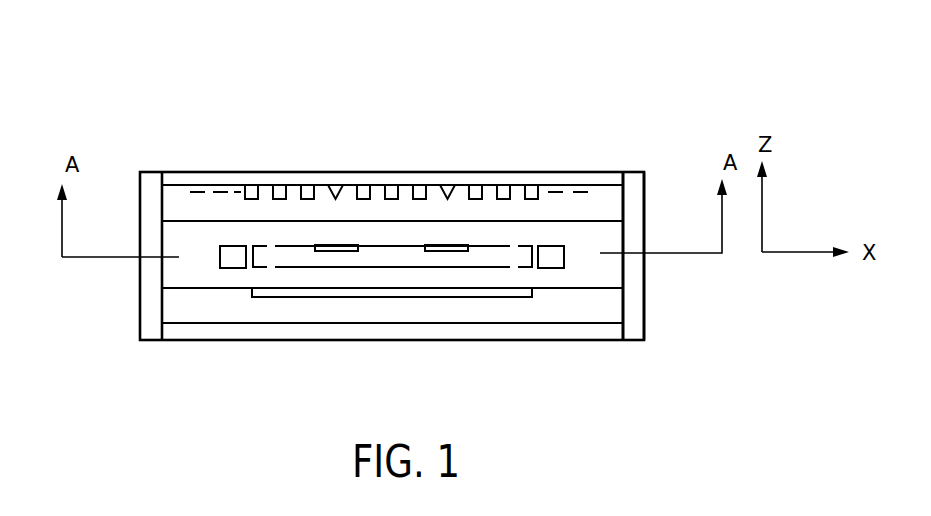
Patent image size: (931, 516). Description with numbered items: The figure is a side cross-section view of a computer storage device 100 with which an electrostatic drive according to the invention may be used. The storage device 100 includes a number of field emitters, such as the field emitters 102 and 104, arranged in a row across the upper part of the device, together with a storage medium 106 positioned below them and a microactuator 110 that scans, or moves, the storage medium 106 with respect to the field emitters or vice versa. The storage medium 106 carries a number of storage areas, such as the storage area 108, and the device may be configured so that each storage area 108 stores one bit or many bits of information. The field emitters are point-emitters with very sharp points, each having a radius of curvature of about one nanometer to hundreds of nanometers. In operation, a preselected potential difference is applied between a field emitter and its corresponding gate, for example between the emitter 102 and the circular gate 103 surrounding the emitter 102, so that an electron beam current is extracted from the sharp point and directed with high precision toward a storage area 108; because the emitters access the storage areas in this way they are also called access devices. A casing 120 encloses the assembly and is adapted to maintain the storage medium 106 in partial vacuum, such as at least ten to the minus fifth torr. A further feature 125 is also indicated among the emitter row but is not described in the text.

The storage device 100 is at (166, 76).
The field emitter 102 is at (392, 129).
The circular gate 103 is at (310, 185).
The field emitter 104 is at (392, 173).
The storage medium 106 is at (382, 262).
The storage area 108 is at (330, 243).
The microactuator 110 is at (493, 297).
The casing 120 is at (638, 300).
The notch 125 is at (502, 142).